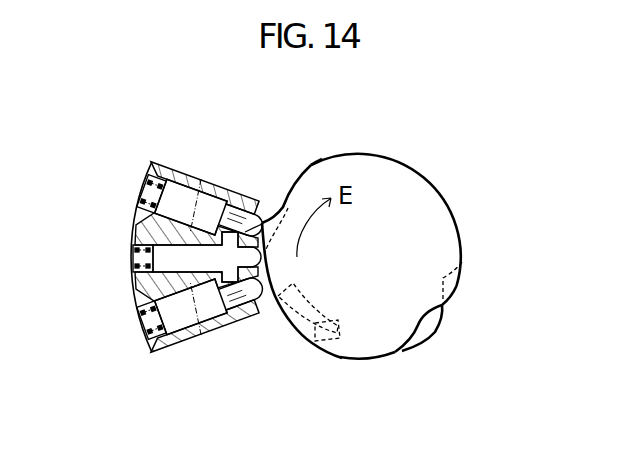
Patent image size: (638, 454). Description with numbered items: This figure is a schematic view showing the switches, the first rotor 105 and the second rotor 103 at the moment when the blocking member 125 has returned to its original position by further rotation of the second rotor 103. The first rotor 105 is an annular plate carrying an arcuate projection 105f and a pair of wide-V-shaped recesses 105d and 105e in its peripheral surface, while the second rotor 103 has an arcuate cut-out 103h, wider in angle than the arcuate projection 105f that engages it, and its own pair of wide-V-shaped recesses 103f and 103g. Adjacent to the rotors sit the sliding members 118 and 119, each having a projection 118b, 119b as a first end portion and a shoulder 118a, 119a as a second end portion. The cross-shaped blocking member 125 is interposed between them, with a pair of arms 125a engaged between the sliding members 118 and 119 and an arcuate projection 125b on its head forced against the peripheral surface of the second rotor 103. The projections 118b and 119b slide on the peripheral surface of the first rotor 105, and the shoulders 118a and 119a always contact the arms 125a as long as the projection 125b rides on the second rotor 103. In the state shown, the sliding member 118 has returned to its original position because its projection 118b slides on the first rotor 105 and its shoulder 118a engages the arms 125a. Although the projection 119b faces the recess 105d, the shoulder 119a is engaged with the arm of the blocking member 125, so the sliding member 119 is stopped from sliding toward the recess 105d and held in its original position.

The second rotor 103 is at (425, 155).
The first rotor 105 is at (363, 254).
The recess 103f is at (300, 176).
The recess 103g is at (418, 332).
The arcuate cut-out 103h is at (306, 318).
The recess 105d is at (285, 200).
The recess 105e is at (444, 312).
The arcuate projection 105f is at (328, 335).
The sliding member 118 is at (173, 327).
The shoulder 118a is at (227, 333).
The projection 118b is at (243, 323).
The sliding member 119 is at (173, 185).
The shoulder 119a is at (233, 196).
The projection 119b is at (261, 200).
The blocking member 125 is at (134, 283).
The arms 125a is at (170, 229).
The projection 125b is at (276, 310).